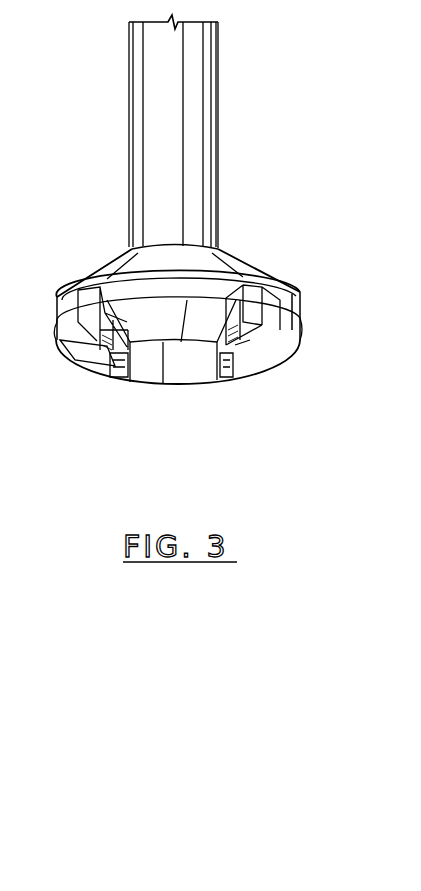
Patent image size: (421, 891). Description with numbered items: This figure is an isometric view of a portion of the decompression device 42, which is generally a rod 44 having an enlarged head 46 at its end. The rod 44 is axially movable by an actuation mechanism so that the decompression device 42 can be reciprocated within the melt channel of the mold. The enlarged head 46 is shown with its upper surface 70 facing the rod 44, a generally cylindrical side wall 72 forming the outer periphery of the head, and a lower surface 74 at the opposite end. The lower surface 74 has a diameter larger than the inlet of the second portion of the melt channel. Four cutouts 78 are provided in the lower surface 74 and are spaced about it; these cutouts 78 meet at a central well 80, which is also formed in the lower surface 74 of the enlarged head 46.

The decompression device 42 is at (262, 132).
The rod 44 is at (207, 73).
The enlarged head 46 is at (213, 266).
The upper surface 70 is at (127, 263).
The cylindrical side wall 72 is at (285, 313).
The lower surface 74 is at (255, 363).
The cutouts 78 is at (75, 352).
The central well 80 is at (177, 363).